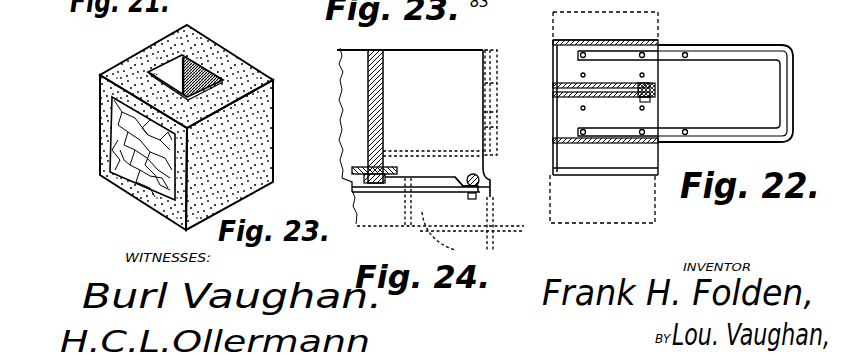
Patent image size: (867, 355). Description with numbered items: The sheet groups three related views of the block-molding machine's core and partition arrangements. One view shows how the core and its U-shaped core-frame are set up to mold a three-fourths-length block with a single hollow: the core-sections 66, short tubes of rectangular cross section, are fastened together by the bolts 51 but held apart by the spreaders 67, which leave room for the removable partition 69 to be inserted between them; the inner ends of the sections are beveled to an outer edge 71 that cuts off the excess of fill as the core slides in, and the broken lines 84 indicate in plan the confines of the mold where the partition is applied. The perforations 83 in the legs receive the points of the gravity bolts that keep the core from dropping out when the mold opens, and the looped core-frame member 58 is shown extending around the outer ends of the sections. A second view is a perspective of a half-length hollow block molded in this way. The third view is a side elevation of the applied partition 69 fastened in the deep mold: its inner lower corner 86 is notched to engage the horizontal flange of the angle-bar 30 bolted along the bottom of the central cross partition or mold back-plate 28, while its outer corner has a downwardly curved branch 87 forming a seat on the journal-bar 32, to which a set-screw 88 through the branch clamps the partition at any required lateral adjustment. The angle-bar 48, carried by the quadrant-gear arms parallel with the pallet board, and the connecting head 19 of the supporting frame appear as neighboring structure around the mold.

In FIG. 24, the connecting head 19 is at (420, 215).
In FIG. 24, the central cross-bar partition or mold back-plate 28 is at (383, 76).
In FIG. 24, the angle-bar 30 is at (350, 180).
In FIG. 24, the journal-bar 32 is at (479, 178).
In FIG. 24, the angle-bar 48 is at (484, 74).
In FIG. 22, the bolts 51 is at (652, 84).
In FIG. 22, the hinge loop frame 58 is at (789, 98).
In FIG. 22, the core-sections 66 is at (612, 95).
In FIG. 22, the spreaders 67 is at (653, 94).
In FIG. 24, the partition 69 is at (433, 100).
In FIG. 22, the partition 69 is at (605, 171).
In FIG. 22, the outer edge 71 is at (553, 42).
In FIG. 22, the perforations 83 is at (688, 58).
In FIG. 22, the broken lines 84 is at (657, 28).
In FIG. 24, the inner lower corner 86 is at (389, 166).
In FIG. 24, the downwardly curved branch 87 is at (460, 187).
In FIG. 24, the set-screw 88 is at (471, 199).